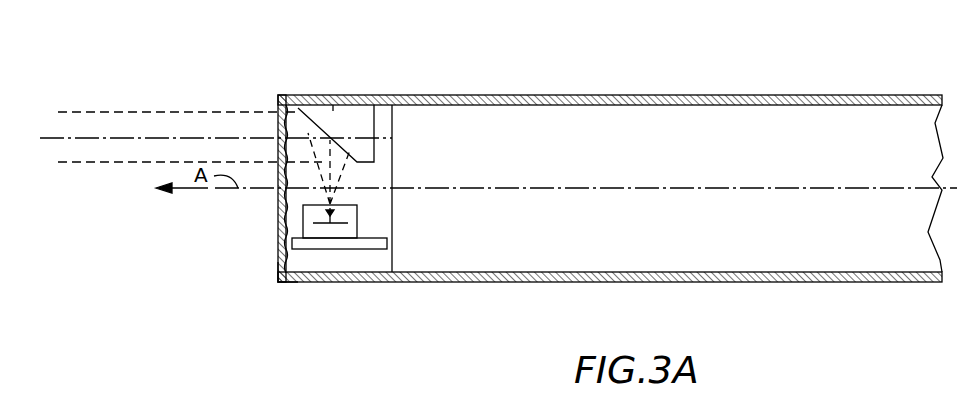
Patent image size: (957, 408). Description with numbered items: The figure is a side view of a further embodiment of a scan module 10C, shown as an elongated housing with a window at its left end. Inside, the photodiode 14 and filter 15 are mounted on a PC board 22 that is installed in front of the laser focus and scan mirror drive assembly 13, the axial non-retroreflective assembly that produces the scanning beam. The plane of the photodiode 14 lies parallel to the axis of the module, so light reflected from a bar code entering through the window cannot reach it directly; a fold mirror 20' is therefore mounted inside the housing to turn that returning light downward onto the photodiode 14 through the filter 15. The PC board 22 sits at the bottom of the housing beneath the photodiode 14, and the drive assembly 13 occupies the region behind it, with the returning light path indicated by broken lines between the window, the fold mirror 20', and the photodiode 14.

The scan module 10C is at (625, 84).
The laser focus and scan mirror drive assembly 13 is at (641, 265).
The photodiode 14 is at (303, 230).
The filter 15 is at (303, 209).
The fold mirror 20' is at (310, 103).
The PC board 22 is at (292, 243).